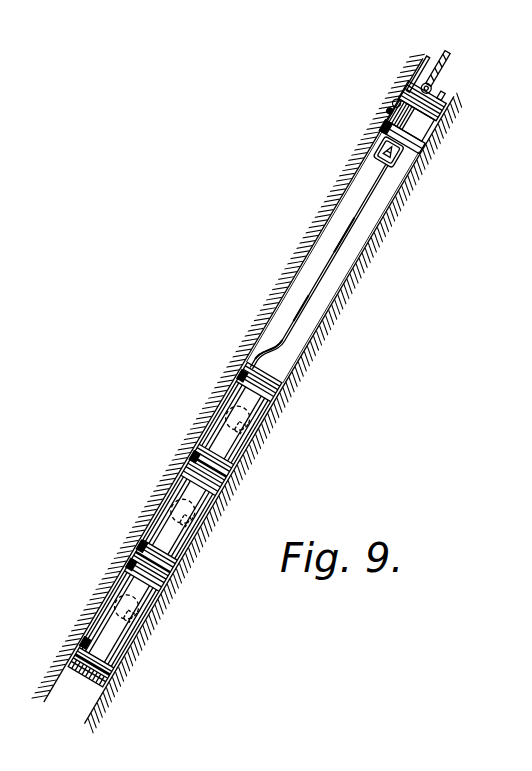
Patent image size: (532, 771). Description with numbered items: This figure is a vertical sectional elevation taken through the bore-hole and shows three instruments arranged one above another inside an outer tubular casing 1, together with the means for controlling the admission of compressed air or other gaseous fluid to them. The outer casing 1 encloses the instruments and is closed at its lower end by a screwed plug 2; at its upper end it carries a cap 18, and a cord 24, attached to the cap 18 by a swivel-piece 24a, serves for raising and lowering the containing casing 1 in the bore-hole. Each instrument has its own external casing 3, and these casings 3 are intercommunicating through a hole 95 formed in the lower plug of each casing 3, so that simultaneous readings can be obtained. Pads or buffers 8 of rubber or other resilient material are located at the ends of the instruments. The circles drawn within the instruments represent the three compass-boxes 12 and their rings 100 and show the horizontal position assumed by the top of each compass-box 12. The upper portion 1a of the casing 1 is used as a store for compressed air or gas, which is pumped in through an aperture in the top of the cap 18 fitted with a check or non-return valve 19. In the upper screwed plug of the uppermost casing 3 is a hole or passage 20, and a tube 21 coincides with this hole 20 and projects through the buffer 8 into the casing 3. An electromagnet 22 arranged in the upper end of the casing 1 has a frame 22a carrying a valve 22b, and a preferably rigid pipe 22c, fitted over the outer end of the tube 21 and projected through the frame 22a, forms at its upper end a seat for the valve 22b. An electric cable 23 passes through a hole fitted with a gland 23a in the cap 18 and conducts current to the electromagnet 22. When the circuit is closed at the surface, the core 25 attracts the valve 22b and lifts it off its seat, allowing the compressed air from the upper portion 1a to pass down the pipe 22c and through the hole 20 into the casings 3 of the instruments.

The outer tubular casing 1 is at (410, 178).
The upper portion of the casing 1a is at (358, 228).
The screwed plug 2 is at (80, 662).
The external casing of the instrument 3 is at (230, 392).
The pads or buffers 8 is at (283, 384).
The compass-box 12 is at (262, 432).
The cap 18 is at (449, 112).
The check or non-return valve 19 is at (440, 102).
The hole or passage 20 is at (236, 377).
The tube 21 is at (246, 368).
The electromagnet 22 is at (428, 150).
The frame 22a is at (370, 151).
The valve 22b is at (422, 162).
The rigid pipe 22c is at (343, 240).
The electric cable 23 is at (421, 64).
The gland 23a is at (398, 100).
The cord 24 is at (448, 65).
The swivel-piece 24a is at (432, 86).
The core 25 is at (380, 140).
The hole 95 is at (152, 535).
The ring 100 is at (263, 416).